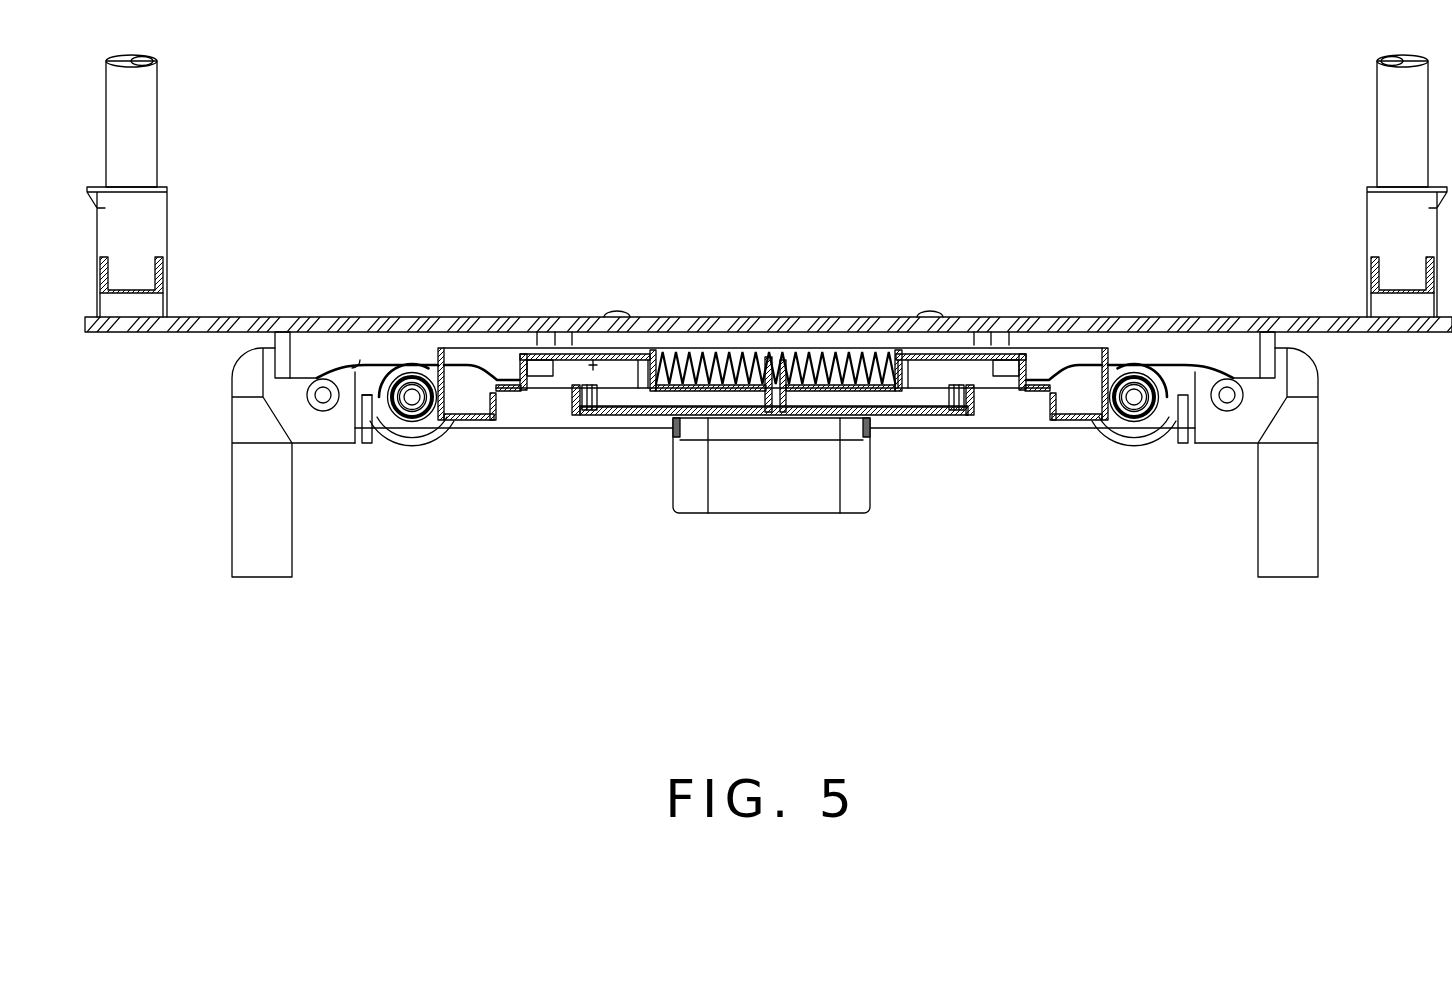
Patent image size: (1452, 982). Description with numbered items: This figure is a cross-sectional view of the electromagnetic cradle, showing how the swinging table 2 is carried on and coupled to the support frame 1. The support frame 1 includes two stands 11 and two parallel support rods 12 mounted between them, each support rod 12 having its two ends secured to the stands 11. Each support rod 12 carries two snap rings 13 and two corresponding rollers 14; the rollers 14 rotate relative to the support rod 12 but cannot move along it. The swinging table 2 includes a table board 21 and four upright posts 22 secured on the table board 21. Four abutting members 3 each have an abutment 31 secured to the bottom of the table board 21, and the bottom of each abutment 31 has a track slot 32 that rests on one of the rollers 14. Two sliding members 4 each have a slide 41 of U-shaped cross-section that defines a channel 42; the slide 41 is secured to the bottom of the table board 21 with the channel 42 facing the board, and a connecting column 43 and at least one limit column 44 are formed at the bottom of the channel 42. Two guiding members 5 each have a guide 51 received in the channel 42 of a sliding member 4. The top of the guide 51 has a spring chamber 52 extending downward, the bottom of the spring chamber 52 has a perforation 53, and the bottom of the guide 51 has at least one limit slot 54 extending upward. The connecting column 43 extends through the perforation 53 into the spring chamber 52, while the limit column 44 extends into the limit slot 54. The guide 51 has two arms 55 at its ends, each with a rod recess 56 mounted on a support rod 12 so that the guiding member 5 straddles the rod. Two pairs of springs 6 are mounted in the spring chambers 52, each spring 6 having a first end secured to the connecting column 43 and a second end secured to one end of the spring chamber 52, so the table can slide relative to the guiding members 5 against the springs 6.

The support frame 1 is at (817, 526).
The stand 11 is at (1300, 532).
The support rod 12 is at (1055, 392).
The snap ring 13 is at (1152, 413).
The roller 14 is at (1162, 400).
The swinging table 2 is at (768, 200).
The table board 21 is at (1318, 318).
The upright post 22 is at (1390, 127).
The abutting member 3 is at (740, 228).
The abutment 31 is at (346, 350).
The track slot 32 is at (337, 368).
The sliding member 4 is at (773, 541).
The slide 41 is at (600, 415).
The channel 42 is at (639, 401).
The connecting column 43 is at (762, 403).
The limit column 44 is at (573, 405).
The guiding member 5 is at (672, 333).
The guide 51 is at (525, 355).
The spring chamber 52 is at (692, 360).
The perforation 53 is at (740, 386).
The limit slot 54 is at (593, 362).
The arm 55 is at (412, 445).
The rod recess 56 is at (368, 400).
The spring 6 is at (815, 357).